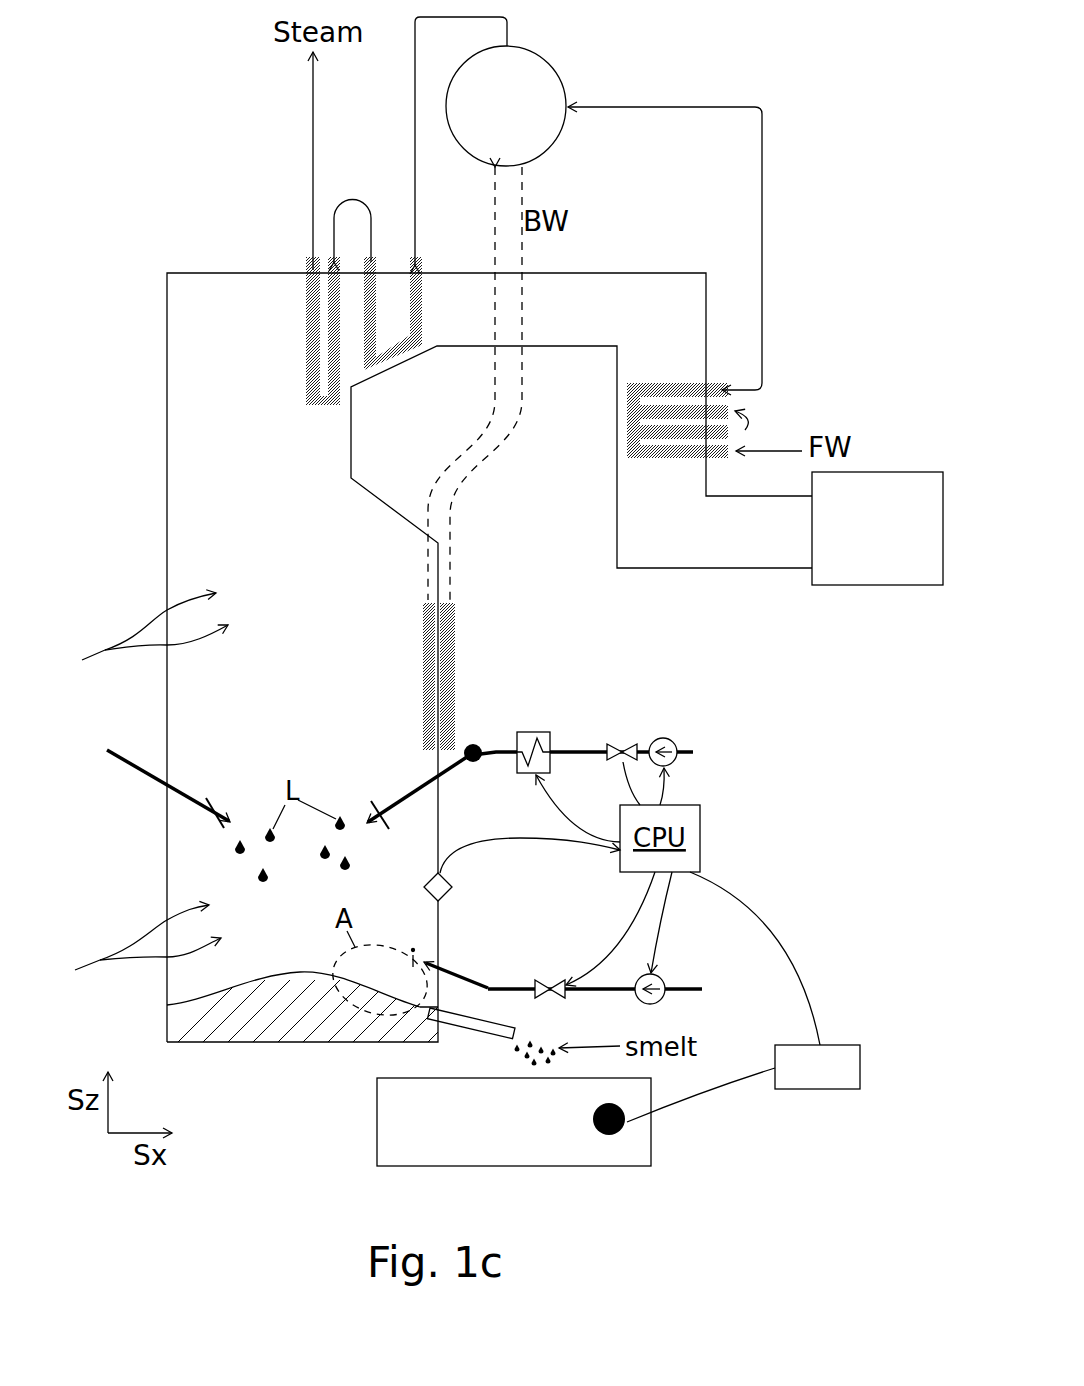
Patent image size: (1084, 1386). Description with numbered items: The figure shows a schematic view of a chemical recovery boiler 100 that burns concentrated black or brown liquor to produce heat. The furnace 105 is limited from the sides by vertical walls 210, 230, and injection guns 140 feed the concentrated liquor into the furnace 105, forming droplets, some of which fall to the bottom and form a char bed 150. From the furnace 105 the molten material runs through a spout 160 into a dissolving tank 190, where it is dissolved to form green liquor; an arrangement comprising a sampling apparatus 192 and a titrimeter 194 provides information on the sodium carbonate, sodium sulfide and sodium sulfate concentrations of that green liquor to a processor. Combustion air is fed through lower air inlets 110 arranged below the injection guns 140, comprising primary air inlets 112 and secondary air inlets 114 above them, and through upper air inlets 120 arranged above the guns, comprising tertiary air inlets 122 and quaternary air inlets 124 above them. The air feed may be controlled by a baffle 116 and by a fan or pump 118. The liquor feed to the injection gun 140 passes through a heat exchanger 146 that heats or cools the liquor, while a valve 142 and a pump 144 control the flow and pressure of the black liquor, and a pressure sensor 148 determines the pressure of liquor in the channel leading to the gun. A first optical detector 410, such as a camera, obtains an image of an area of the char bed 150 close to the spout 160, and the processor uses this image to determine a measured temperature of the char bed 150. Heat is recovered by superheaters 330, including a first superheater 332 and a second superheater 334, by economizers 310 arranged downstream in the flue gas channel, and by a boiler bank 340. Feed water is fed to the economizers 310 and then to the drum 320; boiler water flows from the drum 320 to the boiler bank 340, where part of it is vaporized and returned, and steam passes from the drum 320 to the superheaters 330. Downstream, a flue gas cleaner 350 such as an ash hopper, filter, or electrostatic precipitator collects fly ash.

The chemical recovery boiler 100 is at (148, 197).
The furnace 105 is at (287, 701).
The lower air inlets 110 is at (430, 958).
The primary air inlets 112 is at (204, 950).
The secondary air inlets 114 is at (183, 906).
The baffle 116 is at (548, 980).
The fan or pump 118 is at (676, 980).
The upper air inlets 120 is at (153, 629).
The tertiary air inlets 122 is at (209, 636).
The quaternary air inlets 124 is at (187, 597).
The injection gun 140 is at (202, 802).
The valve 142 is at (627, 749).
The pump 144 is at (668, 738).
The heat exchanger 146 is at (527, 732).
The pressure sensor 148 is at (474, 745).
The char bed 150 is at (340, 1026).
The smelt spout 160 is at (493, 1038).
The dissolving tank 190 is at (360, 442).
The sampling apparatus 192 is at (607, 1136).
The titrimeter 194 is at (743, 1083).
The vertical wall 210 is at (440, 566).
The vertical wall 230 is at (165, 473).
The economizers 310 is at (624, 420).
The drum 320 is at (506, 106).
The superheaters 330 is at (376, 211).
The first superheater 332 is at (305, 275).
The second superheater 334 is at (414, 262).
The boiler bank 340 is at (472, 627).
The flue gas cleaner 350 is at (877, 528).
The first optical detector 410 is at (480, 877).